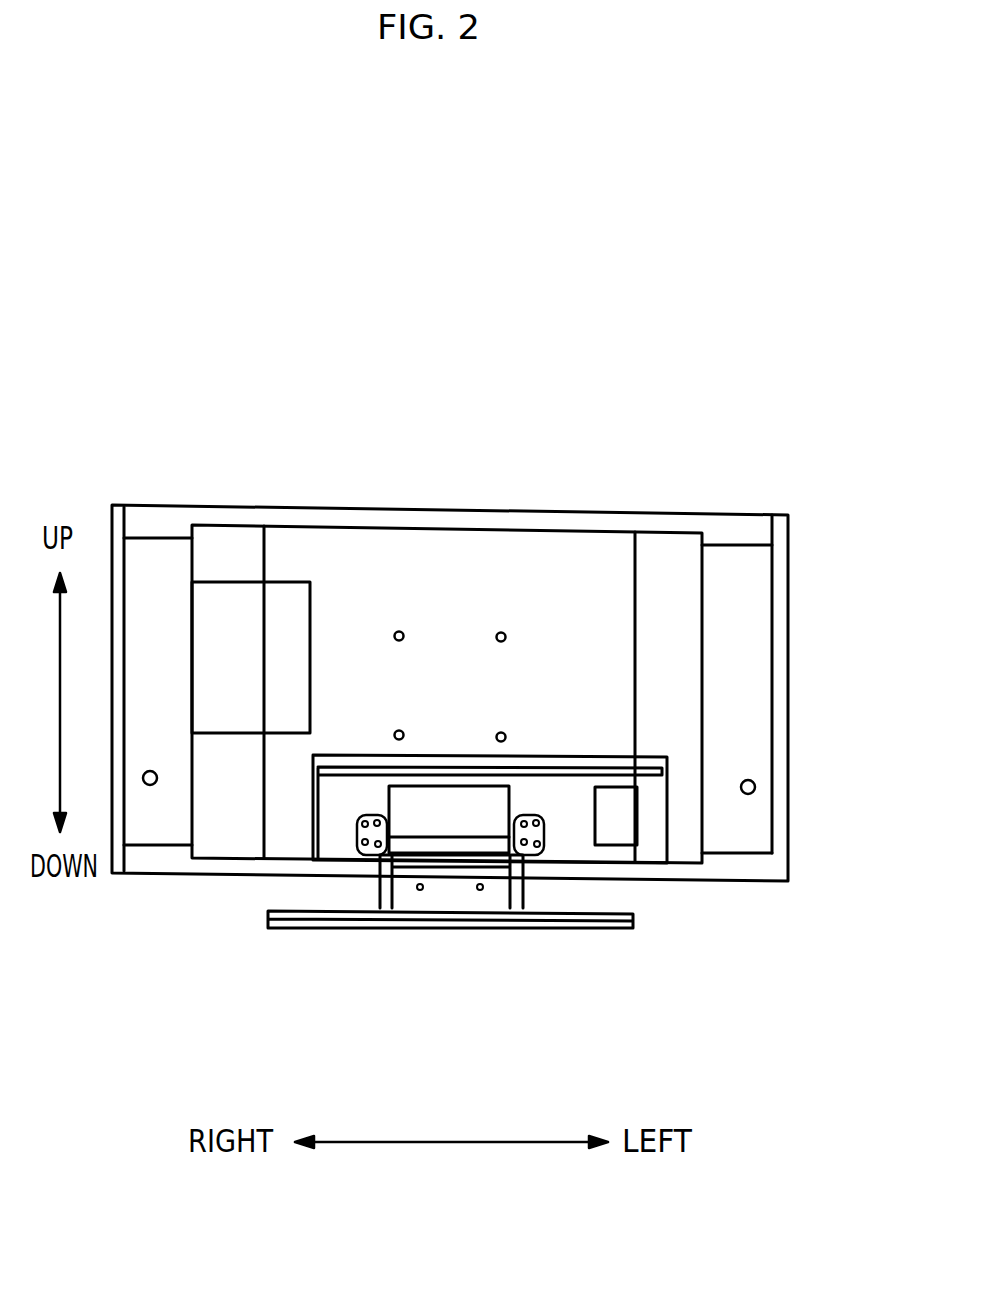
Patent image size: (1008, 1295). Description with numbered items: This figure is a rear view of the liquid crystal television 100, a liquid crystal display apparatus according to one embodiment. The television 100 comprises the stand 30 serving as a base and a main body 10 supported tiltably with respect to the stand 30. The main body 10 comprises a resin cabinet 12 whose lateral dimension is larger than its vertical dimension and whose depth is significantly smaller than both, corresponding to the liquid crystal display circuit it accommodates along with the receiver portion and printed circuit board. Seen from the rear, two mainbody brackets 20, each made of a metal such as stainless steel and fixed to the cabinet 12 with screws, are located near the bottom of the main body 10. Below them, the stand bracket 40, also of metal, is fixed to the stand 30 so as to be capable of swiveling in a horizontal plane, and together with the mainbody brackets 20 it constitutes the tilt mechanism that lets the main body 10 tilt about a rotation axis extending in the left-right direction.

The liquid crystal television 100 is at (732, 447).
The cabinet 12 is at (505, 510).
The main body 10 is at (797, 517).
The stand 30 is at (797, 868).
The mainbody bracket 20 is at (535, 853).
The stand bracket 40 is at (438, 895).